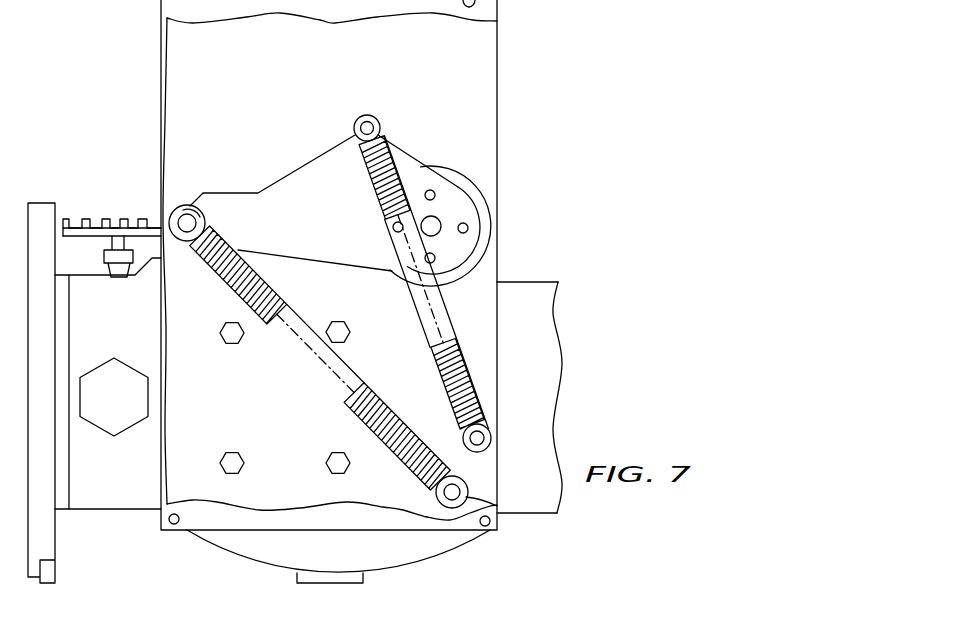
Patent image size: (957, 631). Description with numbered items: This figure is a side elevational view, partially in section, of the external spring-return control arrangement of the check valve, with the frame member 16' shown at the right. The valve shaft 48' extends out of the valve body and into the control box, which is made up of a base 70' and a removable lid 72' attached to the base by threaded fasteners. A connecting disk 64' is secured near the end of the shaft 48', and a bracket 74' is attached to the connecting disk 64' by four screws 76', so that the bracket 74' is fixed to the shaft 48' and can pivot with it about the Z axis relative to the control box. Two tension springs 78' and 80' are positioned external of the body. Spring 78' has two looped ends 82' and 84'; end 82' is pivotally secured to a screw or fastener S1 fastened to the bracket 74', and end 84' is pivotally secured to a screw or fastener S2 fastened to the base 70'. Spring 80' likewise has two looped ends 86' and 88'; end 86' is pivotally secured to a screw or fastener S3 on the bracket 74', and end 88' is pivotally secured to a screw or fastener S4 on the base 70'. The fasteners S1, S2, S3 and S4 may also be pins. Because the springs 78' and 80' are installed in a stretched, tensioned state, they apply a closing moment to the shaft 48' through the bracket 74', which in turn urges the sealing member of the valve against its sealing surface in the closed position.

The frame member 16' is at (544, 379).
The removable lid 72' is at (108, 383).
The looped end 82' is at (116, 219).
The screw or fastener S1 is at (190, 207).
The looped end 86' is at (324, 184).
The screw or fastener S3 is at (366, 116).
The bracket 74' is at (437, 263).
The tension spring 80' is at (364, 177).
The looped end 88' is at (486, 384).
The screw or fastener S4 is at (491, 436).
The connecting disk 64' is at (462, 226).
The screws 76' is at (505, 223).
The shaft 48' is at (455, 183).
The tension spring 78' is at (269, 309).
The base 70' is at (397, 474).
The screw or fastener S2 is at (492, 512).
The looped end 84' is at (470, 541).